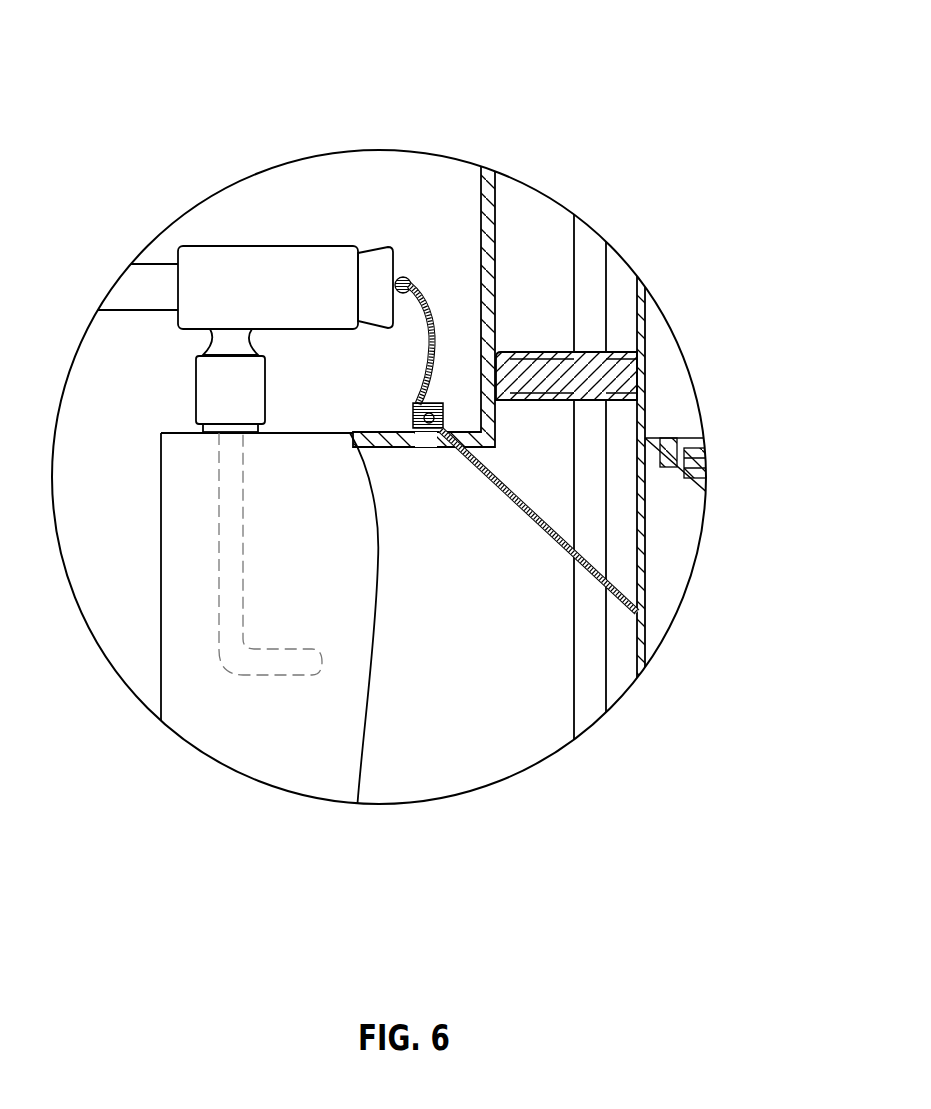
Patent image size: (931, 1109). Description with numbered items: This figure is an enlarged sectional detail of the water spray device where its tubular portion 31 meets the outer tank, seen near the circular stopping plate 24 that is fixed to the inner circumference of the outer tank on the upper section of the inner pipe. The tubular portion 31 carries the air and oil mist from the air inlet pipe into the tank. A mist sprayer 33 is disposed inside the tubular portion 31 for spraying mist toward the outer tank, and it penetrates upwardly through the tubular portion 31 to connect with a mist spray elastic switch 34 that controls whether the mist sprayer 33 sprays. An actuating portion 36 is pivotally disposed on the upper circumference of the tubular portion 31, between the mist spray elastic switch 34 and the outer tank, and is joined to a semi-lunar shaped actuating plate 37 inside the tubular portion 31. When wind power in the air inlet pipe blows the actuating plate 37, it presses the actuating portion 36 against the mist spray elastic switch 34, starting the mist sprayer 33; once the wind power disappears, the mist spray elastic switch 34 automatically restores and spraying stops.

The circular stopping plate 24 is at (530, 357).
The tubular portion 31 is at (303, 432).
The mist sprayer 33 is at (232, 672).
The mist spray elastic switch 34 is at (372, 252).
The actuating portion 36 is at (428, 307).
The actuating plate 37 is at (556, 542).